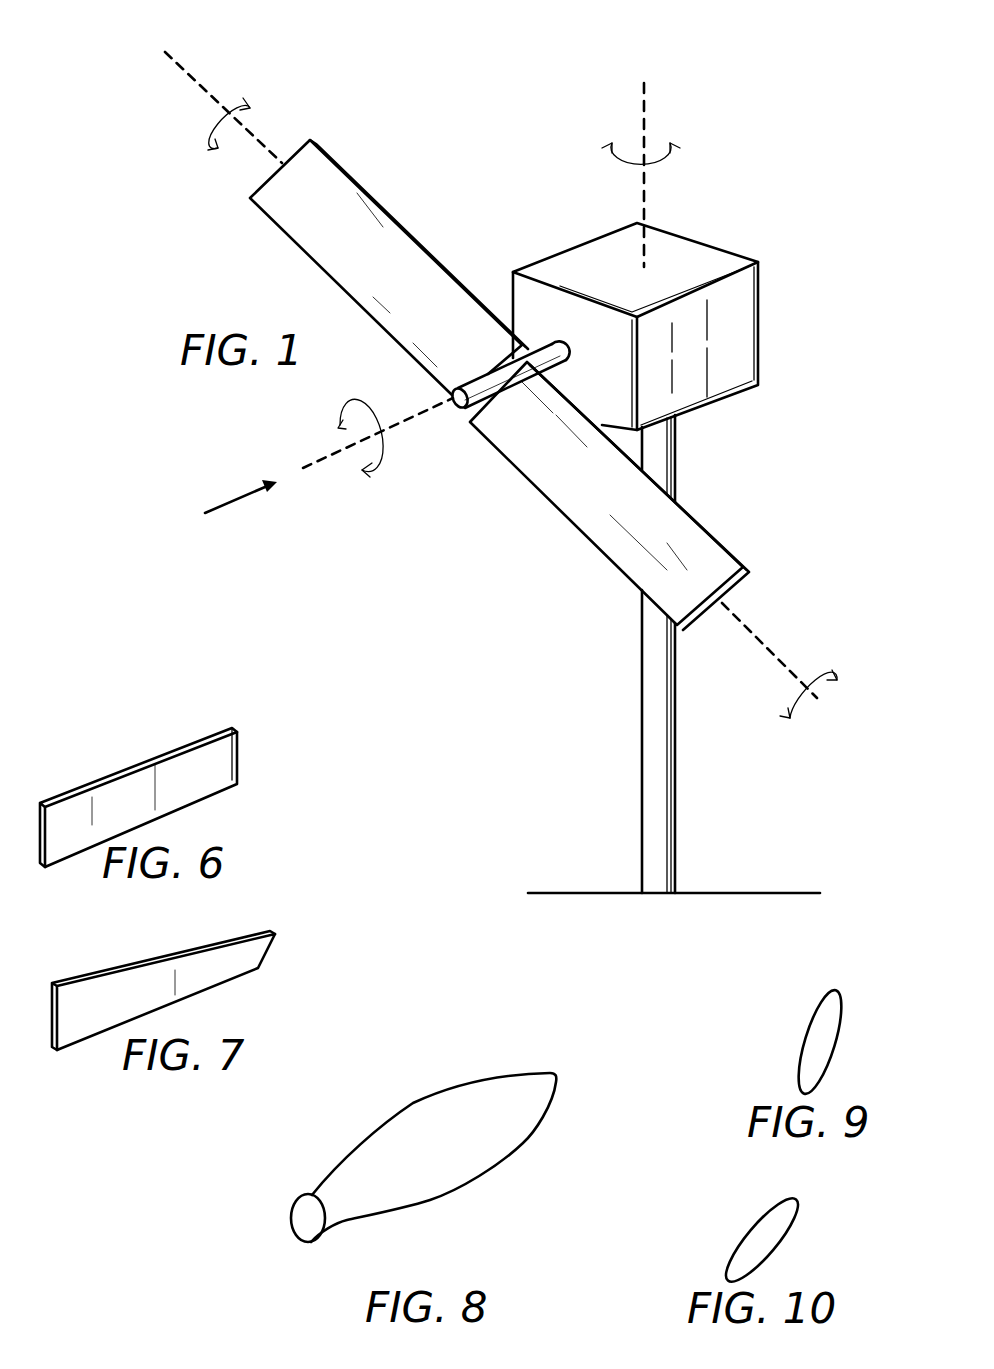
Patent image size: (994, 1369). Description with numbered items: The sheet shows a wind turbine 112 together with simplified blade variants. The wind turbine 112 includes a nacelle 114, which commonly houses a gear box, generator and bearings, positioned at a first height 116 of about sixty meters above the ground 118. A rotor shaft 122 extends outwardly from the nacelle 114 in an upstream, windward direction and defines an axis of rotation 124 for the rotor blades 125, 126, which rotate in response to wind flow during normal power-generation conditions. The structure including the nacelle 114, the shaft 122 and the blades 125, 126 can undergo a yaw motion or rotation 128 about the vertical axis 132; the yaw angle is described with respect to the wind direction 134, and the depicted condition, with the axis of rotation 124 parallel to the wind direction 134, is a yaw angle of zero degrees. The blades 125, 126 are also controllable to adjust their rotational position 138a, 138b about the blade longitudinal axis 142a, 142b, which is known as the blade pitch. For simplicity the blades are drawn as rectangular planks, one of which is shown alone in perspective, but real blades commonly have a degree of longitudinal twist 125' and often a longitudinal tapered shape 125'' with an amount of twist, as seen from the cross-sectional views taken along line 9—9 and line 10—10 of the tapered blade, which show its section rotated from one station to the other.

In FIG. 1, the wind turbine 112 is at (679, 255).
In FIG. 1, the nacelle 114 is at (766, 246).
In FIG. 1, the first height 116 is at (877, 905).
In FIG. 1, the ground 118 is at (593, 893).
In FIG. 1, the rotor shaft 122 is at (548, 345).
In FIG. 1, the axis of rotation 124 is at (404, 423).
In FIG. 1, the rotor blade 125 is at (389, 242).
In FIG. 6, the rotor blade 125 is at (146, 797).
In FIG. 1, the rotor blade 126 is at (576, 482).
In FIG. 1, the yaw motion 128 is at (612, 163).
In FIG. 1, the vertical axis 132 is at (640, 118).
In FIG. 1, the wind direction 134 is at (225, 512).
In FIG. 1, the rotational position 138a is at (248, 105).
In FIG. 1, the rotational position 138b is at (830, 665).
In FIG. 1, the blade longitudinal axis 142a is at (203, 93).
In FIG. 1, the blade longitudinal axis 142b is at (760, 640).
In FIG. 7, the longitudinal twist 125' is at (164, 990).
In FIG. 8, the longitudinal tapered shape 125'' is at (445, 1134).
In FIG. 9, the longitudinal tapered shape 125'' is at (793, 1042).
In FIG. 10, the longitudinal tapered shape 125'' is at (744, 1240).
In FIG. 8, the line 9— 9 is at (353, 1132).
In FIG. 8, the line 10— 10 is at (505, 1046).